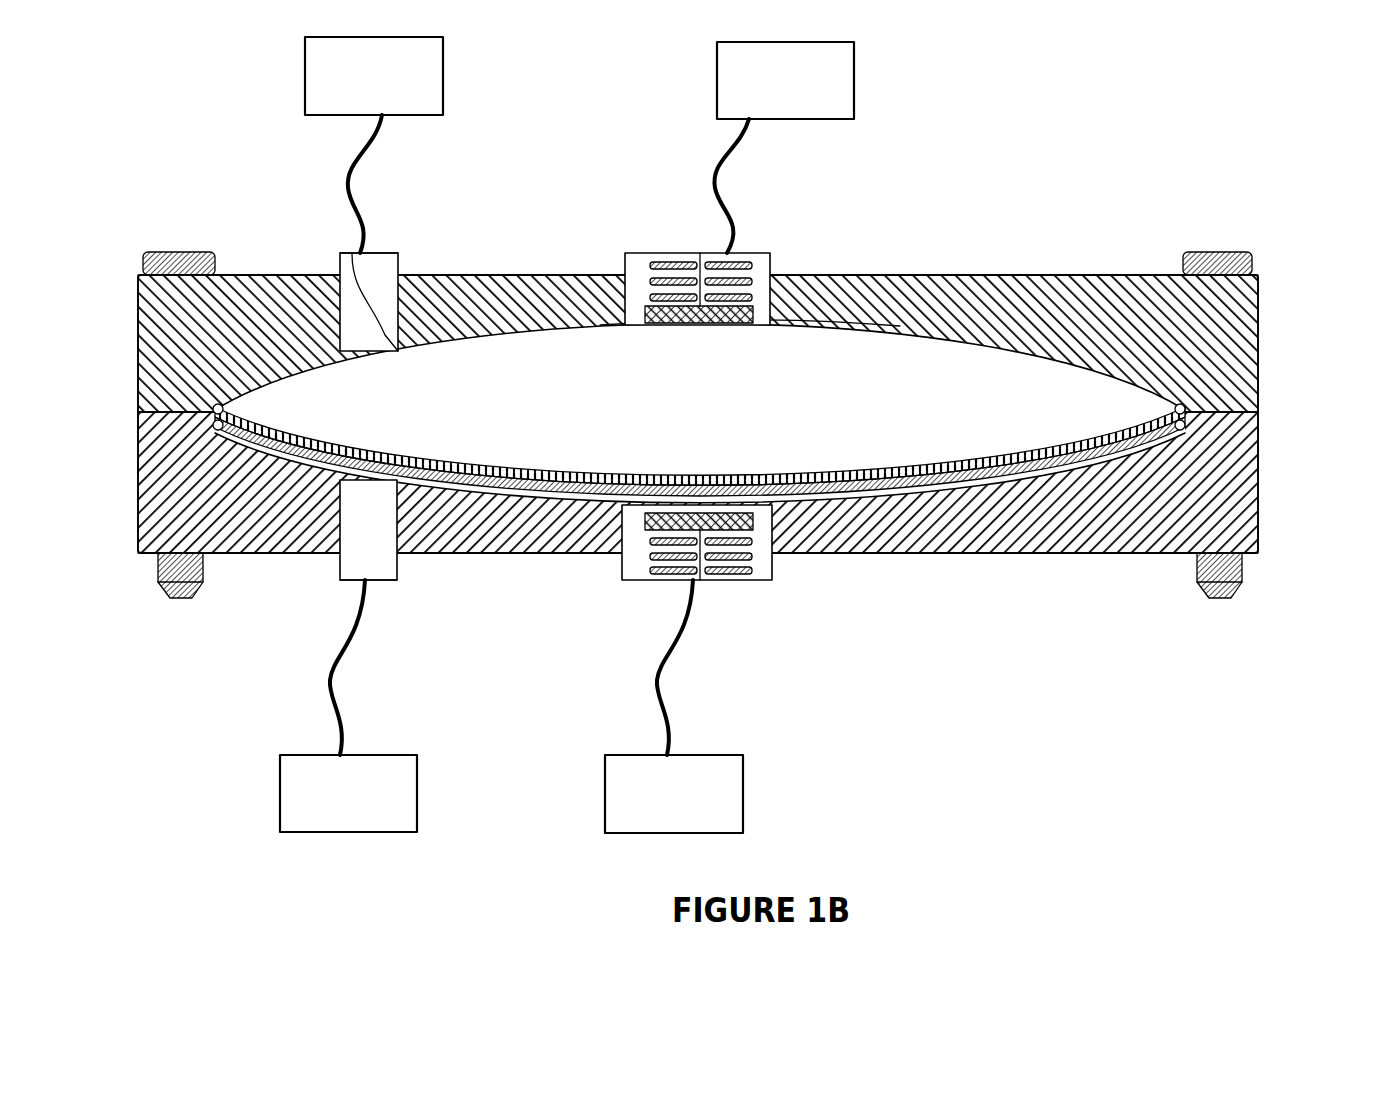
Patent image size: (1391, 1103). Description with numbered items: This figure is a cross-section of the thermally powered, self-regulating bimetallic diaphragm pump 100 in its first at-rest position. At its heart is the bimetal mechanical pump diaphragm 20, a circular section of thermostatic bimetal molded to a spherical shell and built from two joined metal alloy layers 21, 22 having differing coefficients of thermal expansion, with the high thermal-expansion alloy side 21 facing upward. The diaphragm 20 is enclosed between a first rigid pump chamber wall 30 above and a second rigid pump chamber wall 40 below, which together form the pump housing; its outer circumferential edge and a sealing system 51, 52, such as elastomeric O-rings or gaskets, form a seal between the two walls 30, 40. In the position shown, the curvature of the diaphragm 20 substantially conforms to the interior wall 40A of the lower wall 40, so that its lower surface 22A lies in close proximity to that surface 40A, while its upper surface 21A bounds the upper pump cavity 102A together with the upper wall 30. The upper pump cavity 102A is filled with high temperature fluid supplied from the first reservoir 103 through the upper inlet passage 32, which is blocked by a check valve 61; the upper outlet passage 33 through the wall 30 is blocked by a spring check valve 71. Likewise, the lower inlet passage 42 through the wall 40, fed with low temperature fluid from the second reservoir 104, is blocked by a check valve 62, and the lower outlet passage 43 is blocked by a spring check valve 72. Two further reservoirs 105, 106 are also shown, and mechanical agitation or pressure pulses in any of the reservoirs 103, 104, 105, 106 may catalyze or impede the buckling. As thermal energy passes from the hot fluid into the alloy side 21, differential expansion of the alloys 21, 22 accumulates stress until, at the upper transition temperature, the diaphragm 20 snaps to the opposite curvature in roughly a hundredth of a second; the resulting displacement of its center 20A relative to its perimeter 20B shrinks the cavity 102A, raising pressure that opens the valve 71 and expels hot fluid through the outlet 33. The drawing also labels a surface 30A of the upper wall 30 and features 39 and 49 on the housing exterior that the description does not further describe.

The bimetallic diaphragm pump 100 is at (655, 52).
The bimetal mechanical pump diaphragm 20 is at (704, 500).
The center of the diaphragm 20A is at (695, 475).
The perimeter of the diaphragm 20B is at (1240, 413).
The high thermal-expansion alloy layer 21 is at (907, 460).
The upper surface of the diaphragm 21A is at (820, 470).
The second metal alloy layer 22 is at (952, 556).
The lower surface of the diaphragm 22A is at (1085, 455).
The first rigid pump chamber wall 30 is at (458, 277).
The upper housing inner surface 30A is at (942, 336).
The upper inlet passage 32 is at (389, 252).
The upper outlet passage 33 is at (735, 256).
The mounting tab 39 is at (160, 268).
The second rigid pump chamber wall 40 is at (452, 557).
The interior wall of the second rigid pump chamber wall 40A is at (1035, 480).
The lower inlet passage 42 is at (388, 581).
The lower outlet passage 43 is at (699, 575).
The mounting foot 49 is at (163, 570).
The sealing system 51 is at (138, 385).
The sealing system 52 is at (138, 437).
The check valve 61 is at (344, 252).
The check valve 62 is at (305, 581).
The spring check valve 71 is at (757, 263).
The spring check valve 72 is at (732, 581).
The upper pump cavity 102A is at (913, 393).
The first reservoir 103 is at (443, 70).
The second reservoir 104 is at (417, 790).
The reservoir 105 is at (854, 73).
The reservoir 106 is at (743, 790).